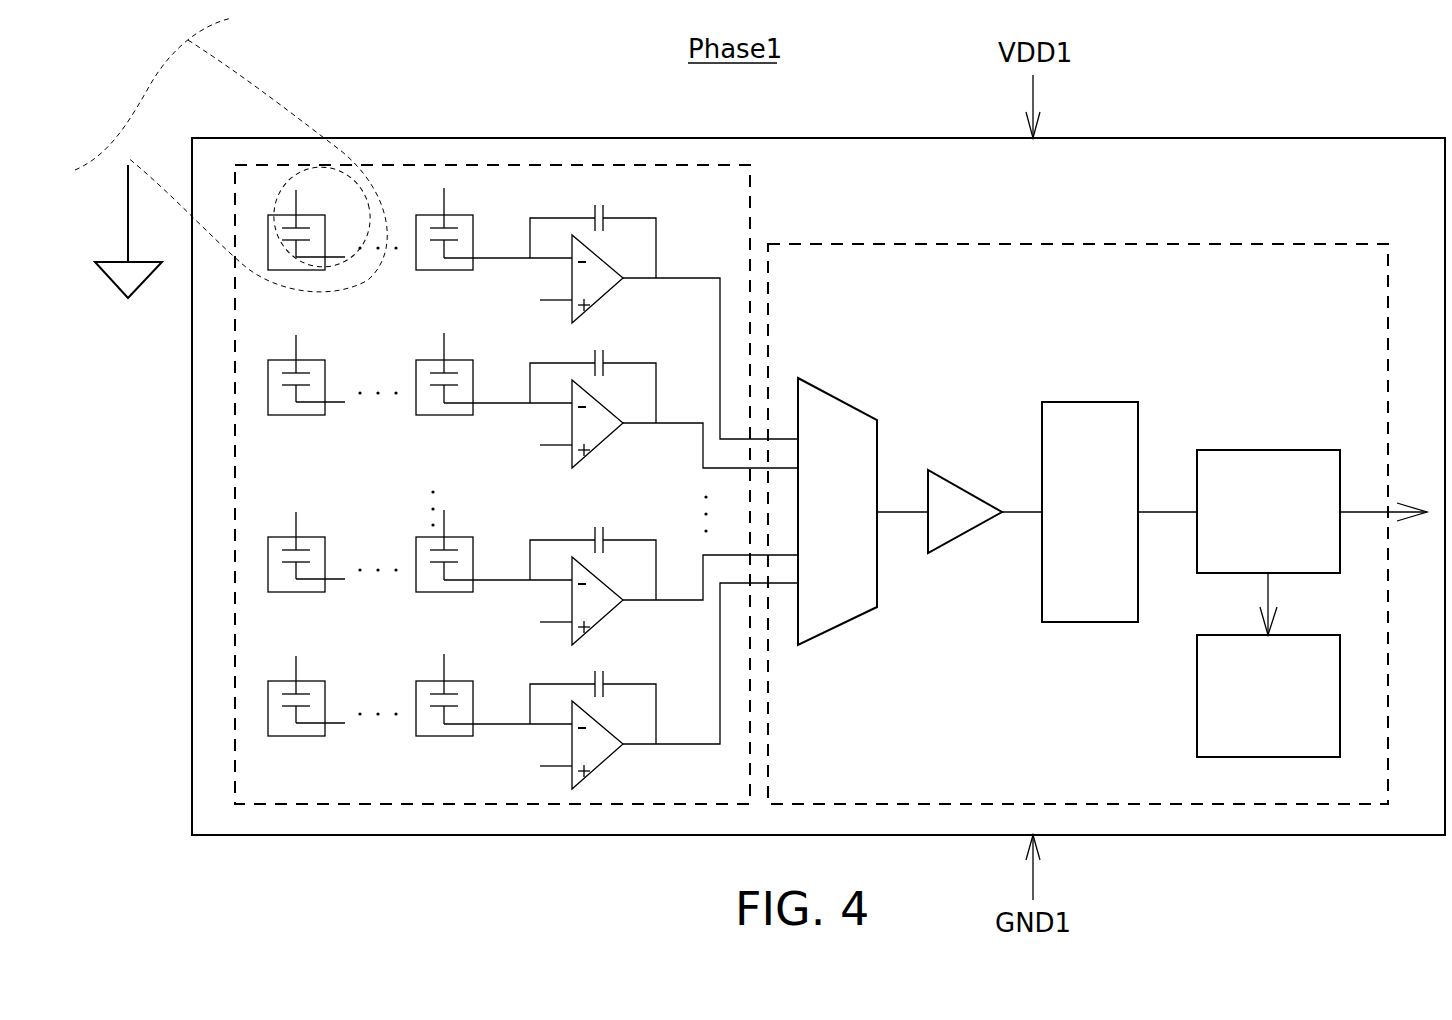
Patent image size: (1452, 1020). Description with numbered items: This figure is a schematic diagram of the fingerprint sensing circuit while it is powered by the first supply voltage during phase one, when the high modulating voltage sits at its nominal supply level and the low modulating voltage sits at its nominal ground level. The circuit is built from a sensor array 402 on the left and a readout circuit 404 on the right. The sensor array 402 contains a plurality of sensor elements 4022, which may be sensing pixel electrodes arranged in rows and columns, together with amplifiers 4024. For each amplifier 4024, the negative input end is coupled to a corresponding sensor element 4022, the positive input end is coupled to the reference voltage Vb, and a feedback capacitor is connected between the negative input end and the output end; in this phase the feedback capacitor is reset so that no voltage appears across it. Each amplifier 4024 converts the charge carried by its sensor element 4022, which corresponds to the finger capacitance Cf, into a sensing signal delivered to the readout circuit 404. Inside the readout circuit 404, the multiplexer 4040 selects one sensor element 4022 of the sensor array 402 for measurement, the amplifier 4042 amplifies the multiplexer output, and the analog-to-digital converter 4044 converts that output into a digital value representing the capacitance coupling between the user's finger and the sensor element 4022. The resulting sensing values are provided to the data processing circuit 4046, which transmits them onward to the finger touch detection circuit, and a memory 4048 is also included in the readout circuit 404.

The sensor array 402 is at (750, 203).
The sensor element 4022 is at (416, 268).
The amplifier 4024 is at (606, 292).
The readout circuit 404 is at (1233, 244).
The multiplexer 4040 is at (840, 400).
The amplifier 4042 is at (960, 487).
The analog-to-digital converter 4044 is at (1083, 402).
The data processing circuit 4046 is at (1273, 450).
The memory 4048 is at (1340, 655).